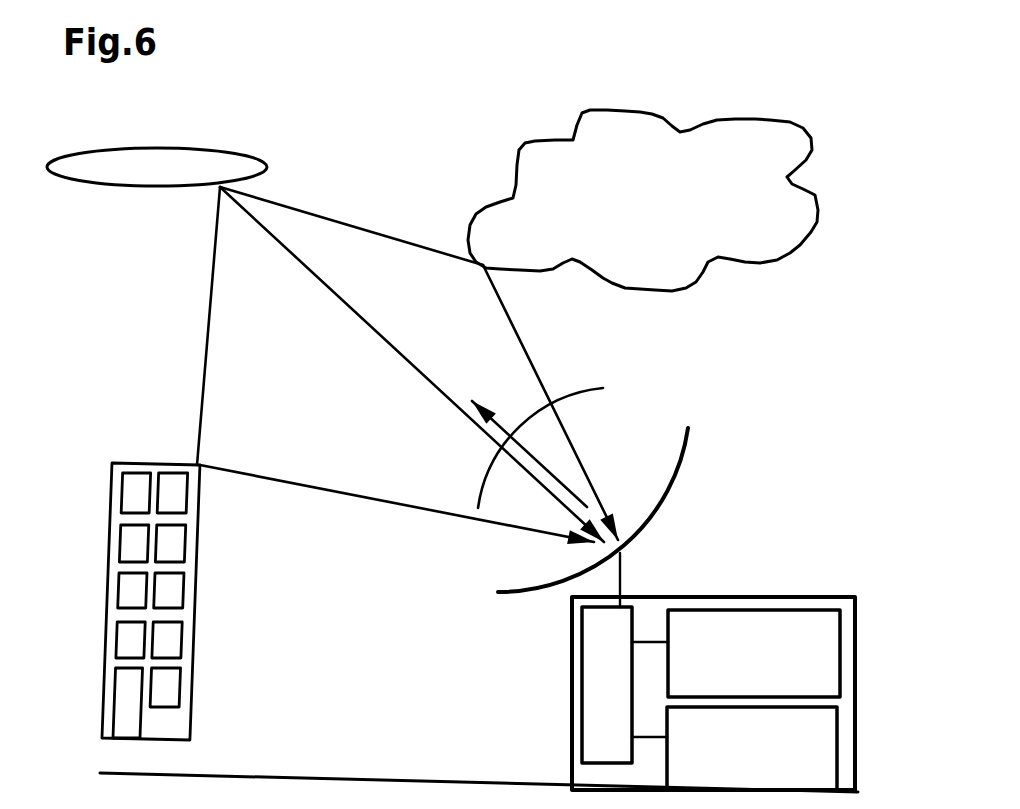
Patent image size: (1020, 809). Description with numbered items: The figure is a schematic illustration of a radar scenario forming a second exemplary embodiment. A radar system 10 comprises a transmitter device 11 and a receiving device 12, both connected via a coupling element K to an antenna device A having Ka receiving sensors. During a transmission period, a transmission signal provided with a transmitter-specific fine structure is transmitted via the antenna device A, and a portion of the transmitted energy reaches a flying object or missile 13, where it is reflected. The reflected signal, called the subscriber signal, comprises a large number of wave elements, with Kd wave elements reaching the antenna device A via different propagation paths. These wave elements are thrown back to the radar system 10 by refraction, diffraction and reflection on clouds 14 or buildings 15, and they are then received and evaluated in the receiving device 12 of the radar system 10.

The radar system 10 is at (747, 662).
The transmitter device 11 is at (830, 658).
The receiving device 12 is at (830, 752).
The flying object or missile 13 is at (183, 165).
The clouds 14 is at (540, 170).
The buildings 15 is at (190, 613).
The antenna device A is at (593, 517).
The coupling element K is at (607, 685).